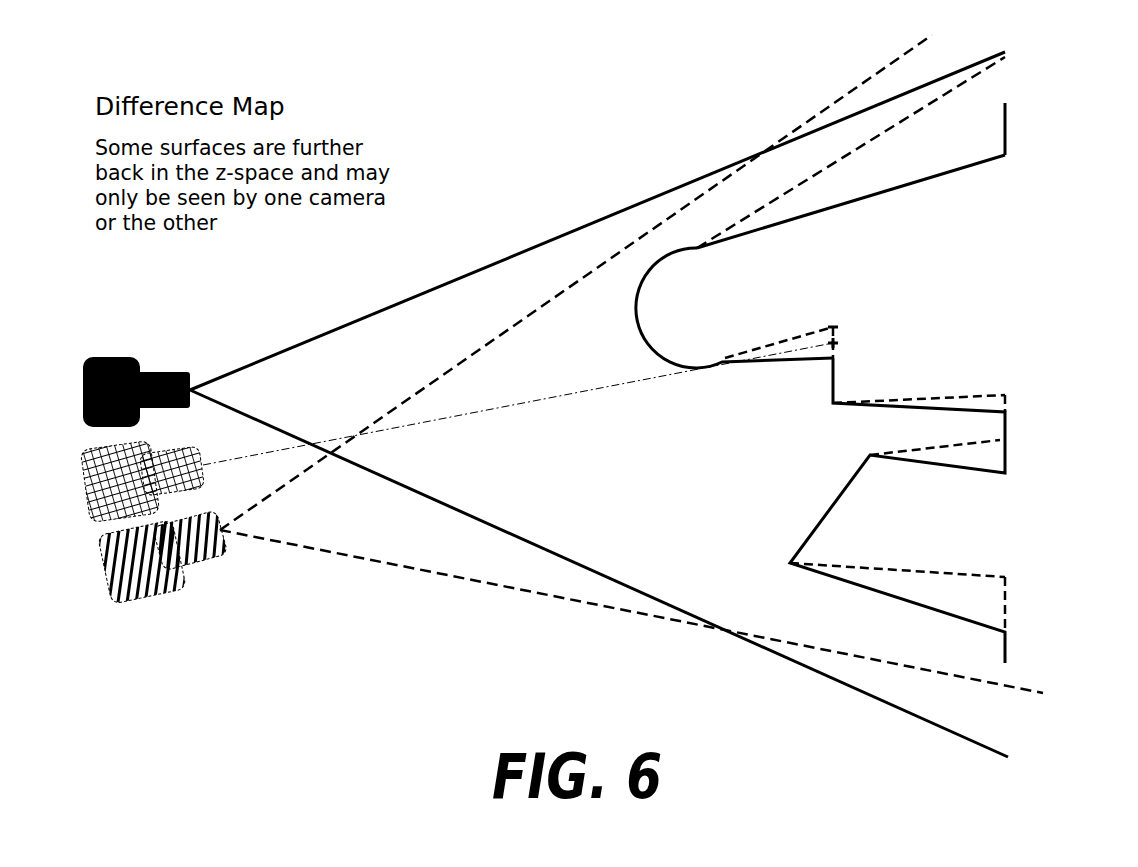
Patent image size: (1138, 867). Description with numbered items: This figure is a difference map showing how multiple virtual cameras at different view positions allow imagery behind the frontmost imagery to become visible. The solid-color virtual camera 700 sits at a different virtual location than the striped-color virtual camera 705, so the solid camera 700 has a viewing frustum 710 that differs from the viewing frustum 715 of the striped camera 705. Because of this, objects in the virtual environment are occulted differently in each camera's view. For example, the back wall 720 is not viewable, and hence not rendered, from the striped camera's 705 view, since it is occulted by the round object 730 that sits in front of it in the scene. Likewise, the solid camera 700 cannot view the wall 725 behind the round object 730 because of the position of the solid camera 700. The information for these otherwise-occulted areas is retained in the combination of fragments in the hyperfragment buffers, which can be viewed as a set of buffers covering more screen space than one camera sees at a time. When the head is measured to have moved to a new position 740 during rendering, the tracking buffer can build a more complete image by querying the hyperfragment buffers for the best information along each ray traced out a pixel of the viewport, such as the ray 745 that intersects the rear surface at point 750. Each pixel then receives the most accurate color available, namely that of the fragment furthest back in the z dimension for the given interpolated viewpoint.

The solid-color virtual camera 700 is at (162, 344).
The striped-color virtual camera 705 is at (215, 579).
The viewing frustum 710 is at (477, 256).
The viewing frustum 715 is at (472, 600).
The back wall 720 is at (1025, 136).
The wall 725 is at (852, 323).
The round object 730 is at (622, 340).
The new position 740 is at (90, 527).
The ray 745 is at (556, 409).
The intersection with rear surface 750 is at (858, 343).